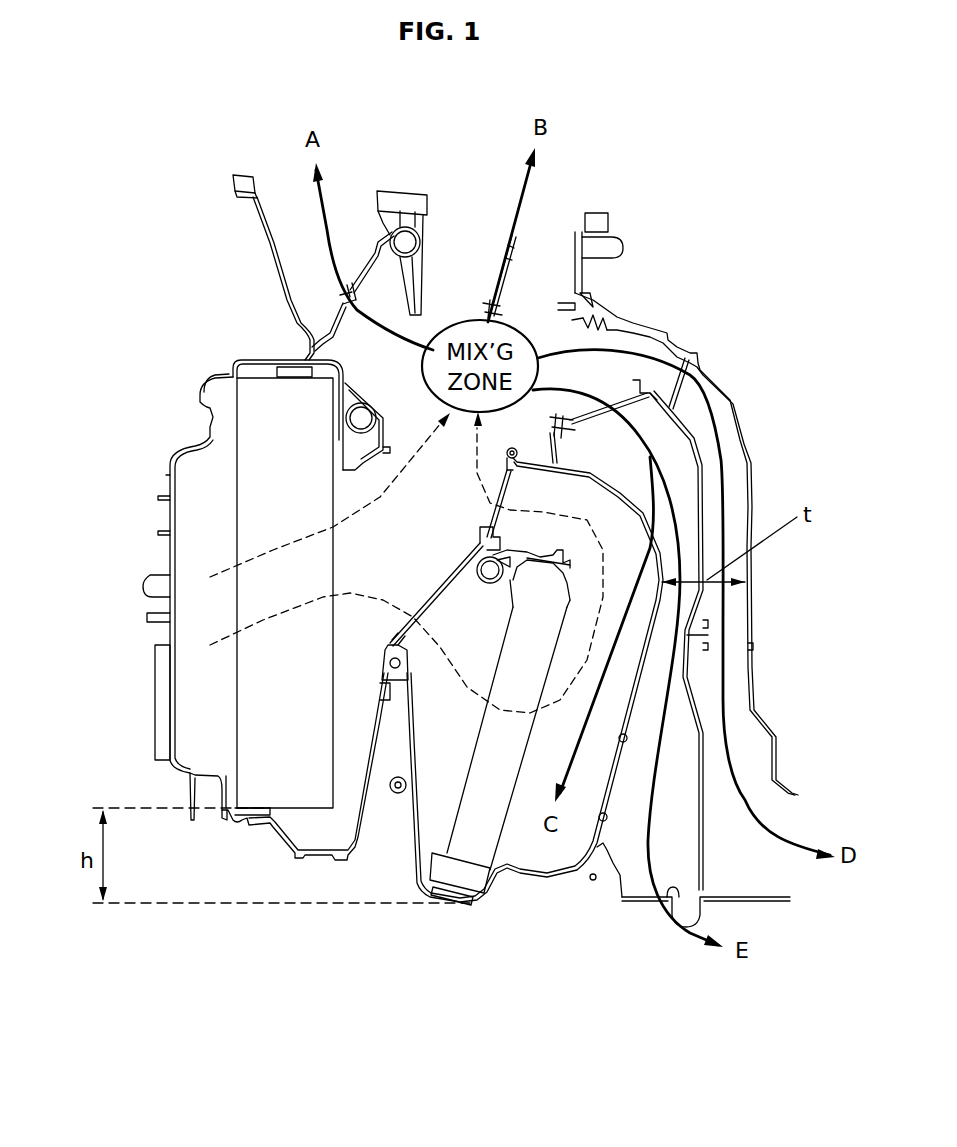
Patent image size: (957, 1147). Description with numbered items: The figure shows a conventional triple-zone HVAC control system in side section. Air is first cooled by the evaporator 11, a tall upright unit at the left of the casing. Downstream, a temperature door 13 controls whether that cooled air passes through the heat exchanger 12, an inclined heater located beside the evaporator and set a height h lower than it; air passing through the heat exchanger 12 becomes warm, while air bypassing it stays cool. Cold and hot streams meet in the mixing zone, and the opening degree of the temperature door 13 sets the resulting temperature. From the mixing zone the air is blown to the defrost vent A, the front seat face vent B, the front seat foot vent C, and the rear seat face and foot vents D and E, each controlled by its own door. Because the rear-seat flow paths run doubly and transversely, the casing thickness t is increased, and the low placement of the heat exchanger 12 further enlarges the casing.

The evaporator 11 is at (270, 705).
The heat exchanger 12 is at (493, 800).
The temperature door 13 is at (445, 585).